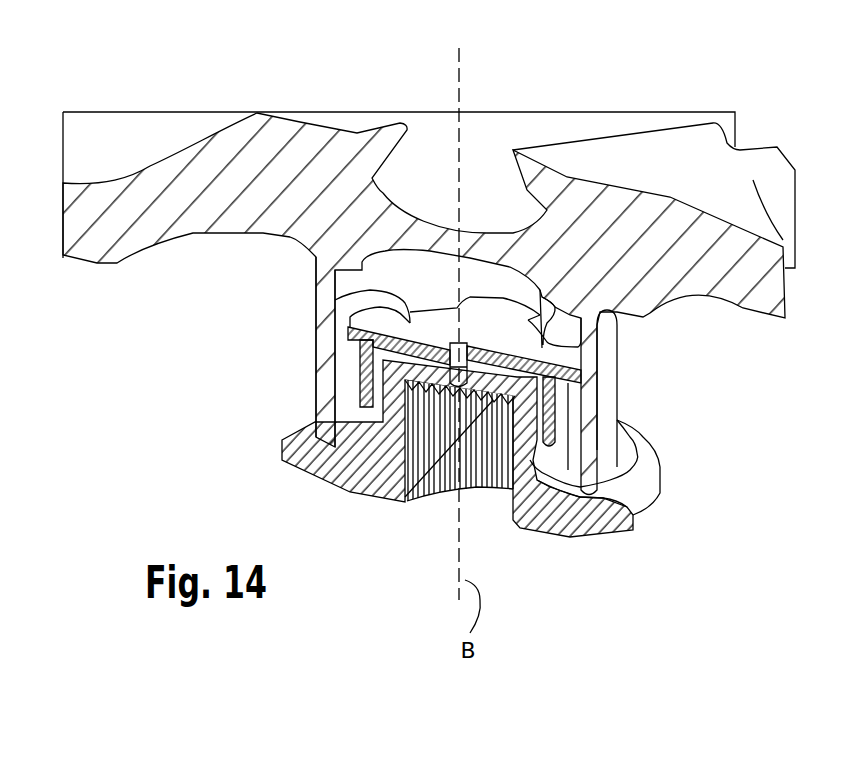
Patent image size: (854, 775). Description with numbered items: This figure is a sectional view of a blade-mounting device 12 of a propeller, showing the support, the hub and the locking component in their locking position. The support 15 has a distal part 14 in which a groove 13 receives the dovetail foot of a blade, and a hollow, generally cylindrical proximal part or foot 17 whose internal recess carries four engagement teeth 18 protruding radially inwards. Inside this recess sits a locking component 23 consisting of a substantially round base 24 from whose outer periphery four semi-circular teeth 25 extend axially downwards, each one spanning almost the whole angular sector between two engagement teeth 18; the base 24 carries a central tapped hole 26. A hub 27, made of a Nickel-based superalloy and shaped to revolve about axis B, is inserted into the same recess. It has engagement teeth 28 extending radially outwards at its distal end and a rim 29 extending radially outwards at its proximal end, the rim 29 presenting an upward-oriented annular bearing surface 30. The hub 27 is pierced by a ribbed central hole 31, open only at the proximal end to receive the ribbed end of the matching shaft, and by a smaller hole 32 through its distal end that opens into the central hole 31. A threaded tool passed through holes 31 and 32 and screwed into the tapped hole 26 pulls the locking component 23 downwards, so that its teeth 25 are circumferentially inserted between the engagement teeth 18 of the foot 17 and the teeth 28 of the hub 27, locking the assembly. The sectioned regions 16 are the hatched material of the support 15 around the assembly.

The device 12 is at (461, 454).
The groove 13 is at (434, 170).
The distal part 14 is at (429, 144).
The support 15 is at (600, 207).
The plate body section 16 is at (180, 165).
The proximal part 17 is at (323, 365).
The engagement teeth 18 is at (543, 533).
The locking component 23 is at (393, 319).
The base 24 is at (390, 297).
The teeth 25 is at (360, 393).
The tapped hole 26 is at (373, 347).
The hub 27 is at (623, 510).
The engagement teeth 28 is at (573, 395).
The rim 29 is at (607, 537).
The annular bearing surface 30 is at (630, 482).
The central hole 31 is at (500, 490).
The hole 32 is at (425, 497).